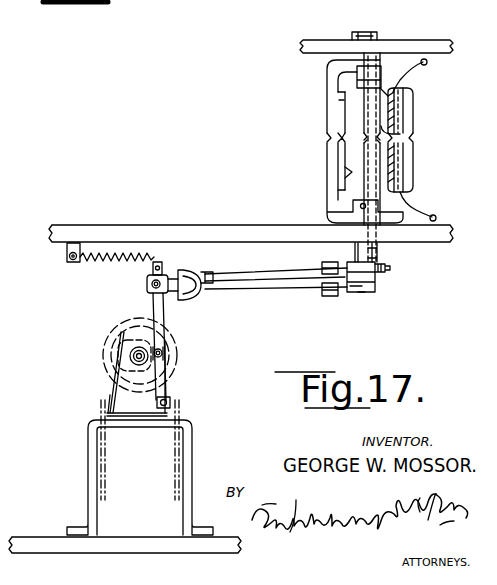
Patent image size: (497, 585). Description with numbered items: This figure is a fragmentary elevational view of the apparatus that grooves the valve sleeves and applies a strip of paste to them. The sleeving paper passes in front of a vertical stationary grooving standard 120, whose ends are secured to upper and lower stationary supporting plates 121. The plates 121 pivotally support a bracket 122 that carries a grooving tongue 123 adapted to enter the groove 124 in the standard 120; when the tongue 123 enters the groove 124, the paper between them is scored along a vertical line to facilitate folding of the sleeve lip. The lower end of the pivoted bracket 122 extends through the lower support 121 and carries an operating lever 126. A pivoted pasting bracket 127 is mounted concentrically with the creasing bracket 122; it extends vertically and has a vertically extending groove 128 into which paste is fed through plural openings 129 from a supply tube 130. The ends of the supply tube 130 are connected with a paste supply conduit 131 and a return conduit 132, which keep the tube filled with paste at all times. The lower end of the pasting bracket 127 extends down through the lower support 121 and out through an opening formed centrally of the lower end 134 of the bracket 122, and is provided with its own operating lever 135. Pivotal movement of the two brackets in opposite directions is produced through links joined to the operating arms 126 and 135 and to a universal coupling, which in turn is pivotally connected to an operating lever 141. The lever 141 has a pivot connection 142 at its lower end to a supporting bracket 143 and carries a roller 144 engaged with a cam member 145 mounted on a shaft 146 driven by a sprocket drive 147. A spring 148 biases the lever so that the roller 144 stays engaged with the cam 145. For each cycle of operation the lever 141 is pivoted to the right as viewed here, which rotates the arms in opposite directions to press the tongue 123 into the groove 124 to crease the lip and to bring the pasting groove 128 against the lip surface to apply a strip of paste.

The grooving standard 120 is at (377, 102).
The stationary supporting plates 121 is at (398, 43).
The pivoted bracket 122 is at (329, 76).
The grooving tongue 123 is at (347, 172).
The groove 124 is at (365, 115).
The operating lever 126 is at (347, 267).
The pasting bracket 127 is at (413, 110).
The groove 128 is at (400, 134).
The openings 129 is at (395, 92).
The supply tube 130 is at (402, 122).
The paste supply conduit 131 is at (428, 62).
The return conduit 132 is at (428, 211).
The lower end of the bracket 134 is at (378, 256).
The operating lever 135 is at (352, 288).
The operating lever 141 is at (166, 312).
The pivot connection 142 is at (171, 403).
The supporting bracket 143 is at (186, 462).
The roller 144 is at (178, 351).
The cam member 145 is at (118, 354).
The shaft 146 is at (137, 357).
The sprocket drive 147 is at (118, 323).
The spring 148 is at (130, 262).